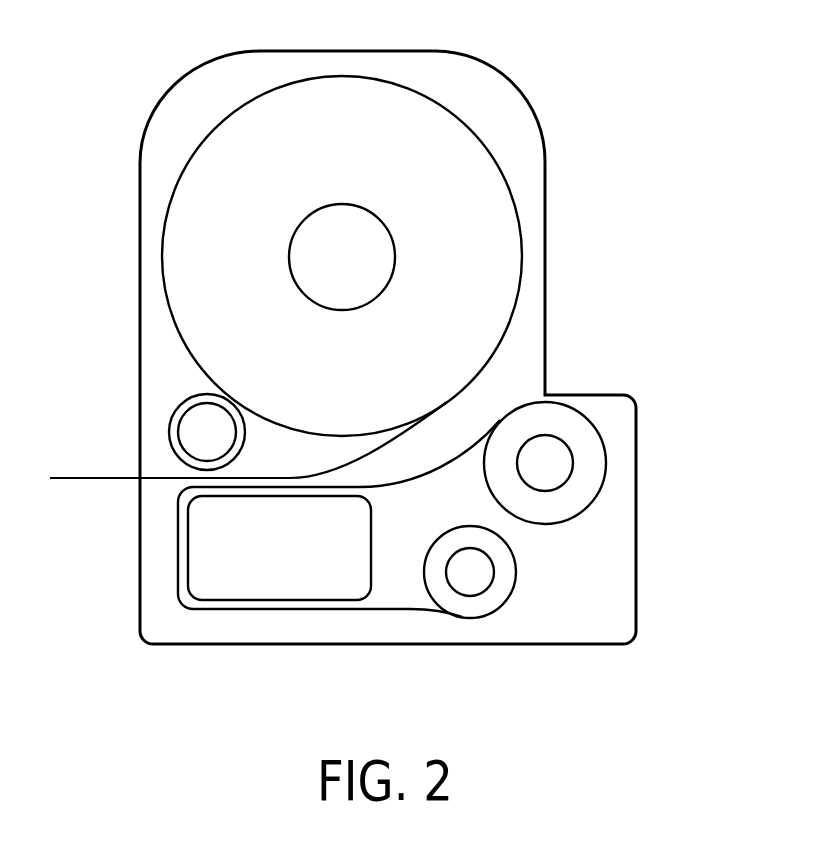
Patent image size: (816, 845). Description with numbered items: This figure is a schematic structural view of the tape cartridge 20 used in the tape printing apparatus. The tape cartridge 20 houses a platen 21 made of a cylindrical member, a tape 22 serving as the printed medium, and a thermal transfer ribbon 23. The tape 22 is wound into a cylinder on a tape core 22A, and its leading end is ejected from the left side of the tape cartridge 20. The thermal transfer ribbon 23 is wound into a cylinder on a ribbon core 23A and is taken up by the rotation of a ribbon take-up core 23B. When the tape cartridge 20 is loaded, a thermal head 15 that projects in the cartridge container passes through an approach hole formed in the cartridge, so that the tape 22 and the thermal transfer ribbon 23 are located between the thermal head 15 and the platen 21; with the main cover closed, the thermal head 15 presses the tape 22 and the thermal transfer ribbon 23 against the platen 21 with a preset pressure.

The tape cartridge 20 is at (603, 84).
The platen 21 is at (197, 430).
The tape 22 is at (118, 478).
The tape core 22A is at (368, 258).
The thermal transfer ribbon 23 is at (417, 611).
The ribbon core 23A is at (557, 466).
The ribbon take-up core 23B is at (470, 572).
The thermal head 15 is at (263, 572).